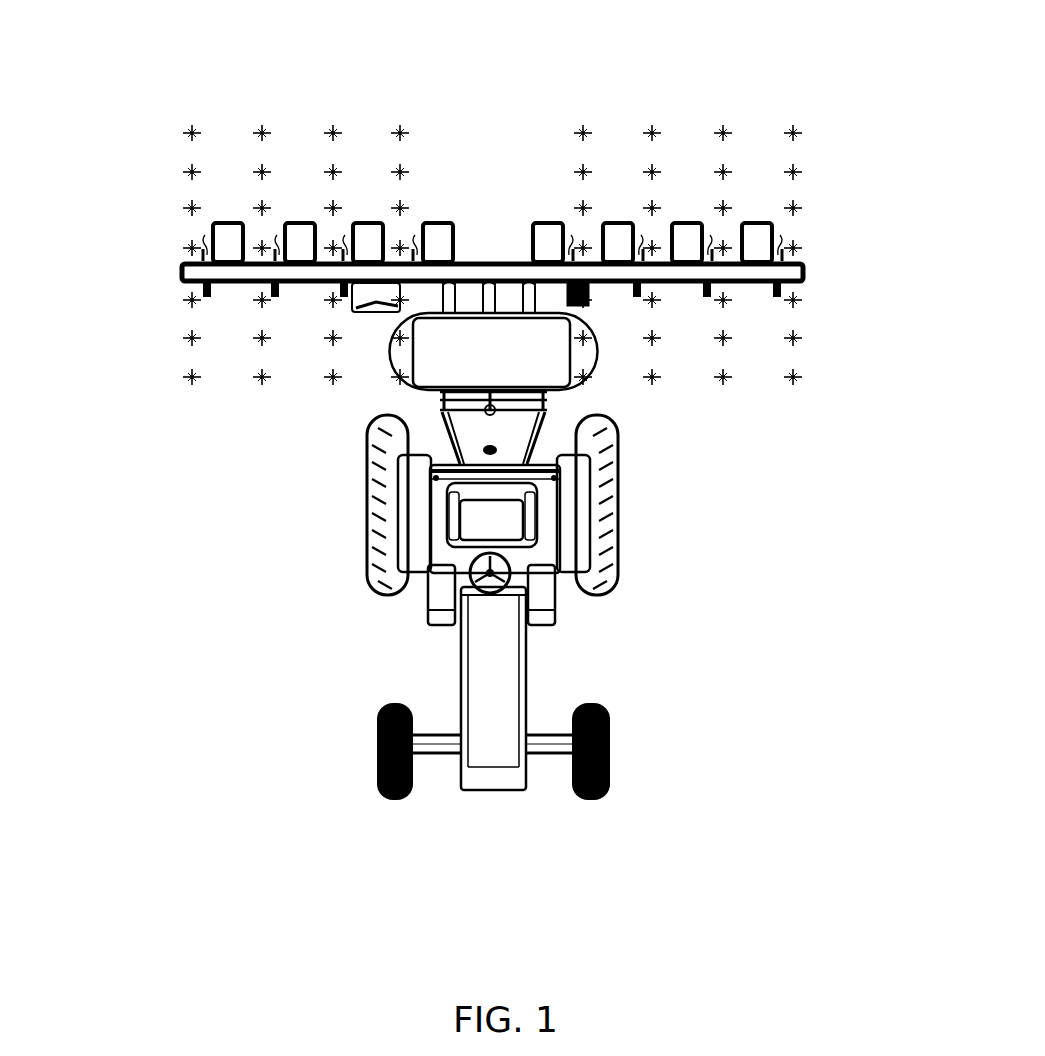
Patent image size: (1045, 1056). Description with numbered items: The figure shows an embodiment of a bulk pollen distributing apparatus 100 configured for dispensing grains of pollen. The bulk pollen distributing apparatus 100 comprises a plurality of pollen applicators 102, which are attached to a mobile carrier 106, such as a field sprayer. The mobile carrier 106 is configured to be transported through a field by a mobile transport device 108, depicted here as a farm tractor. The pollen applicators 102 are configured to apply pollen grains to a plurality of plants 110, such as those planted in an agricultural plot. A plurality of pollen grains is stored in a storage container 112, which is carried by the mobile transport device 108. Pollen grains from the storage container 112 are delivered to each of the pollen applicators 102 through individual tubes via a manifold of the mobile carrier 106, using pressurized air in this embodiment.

The bulk pollen distributing apparatus 100 is at (146, 214).
The pollen applicators 102 is at (687, 238).
The mobile carrier 106 is at (840, 262).
The mobile transport device 108 is at (636, 615).
The plants 110 is at (554, 101).
The storage container 112 is at (512, 345).